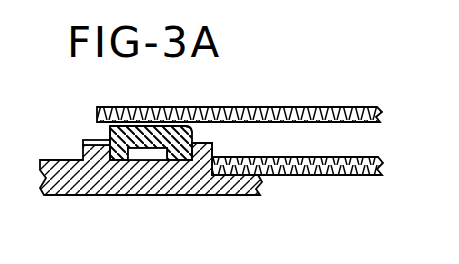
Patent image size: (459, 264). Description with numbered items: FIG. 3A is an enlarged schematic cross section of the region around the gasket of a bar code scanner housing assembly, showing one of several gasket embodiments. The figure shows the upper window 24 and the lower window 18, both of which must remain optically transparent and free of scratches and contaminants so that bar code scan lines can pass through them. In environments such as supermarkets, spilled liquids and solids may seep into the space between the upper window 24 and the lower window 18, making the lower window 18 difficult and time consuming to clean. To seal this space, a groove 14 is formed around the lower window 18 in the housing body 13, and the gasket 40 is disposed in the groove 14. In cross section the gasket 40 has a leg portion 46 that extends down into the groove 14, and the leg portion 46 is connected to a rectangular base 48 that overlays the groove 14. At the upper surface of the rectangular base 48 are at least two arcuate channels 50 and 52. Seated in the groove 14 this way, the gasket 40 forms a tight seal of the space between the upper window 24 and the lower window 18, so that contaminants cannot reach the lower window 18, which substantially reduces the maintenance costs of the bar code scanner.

The substrate 13 is at (88, 178).
The groove 14 is at (147, 165).
The lower window 18 is at (345, 157).
The upper window 24 is at (285, 107).
The gasket 40 is at (110, 127).
The leg portion 46 is at (84, 143).
The rectangular base 48 is at (193, 140).
The arcuate channel 50 is at (167, 126).
The arcuate channel 52 is at (138, 126).